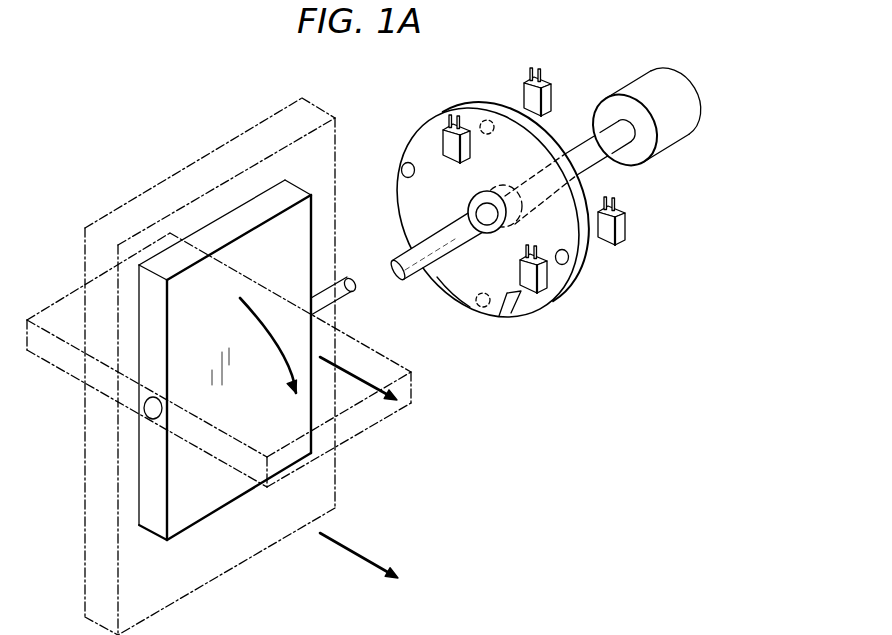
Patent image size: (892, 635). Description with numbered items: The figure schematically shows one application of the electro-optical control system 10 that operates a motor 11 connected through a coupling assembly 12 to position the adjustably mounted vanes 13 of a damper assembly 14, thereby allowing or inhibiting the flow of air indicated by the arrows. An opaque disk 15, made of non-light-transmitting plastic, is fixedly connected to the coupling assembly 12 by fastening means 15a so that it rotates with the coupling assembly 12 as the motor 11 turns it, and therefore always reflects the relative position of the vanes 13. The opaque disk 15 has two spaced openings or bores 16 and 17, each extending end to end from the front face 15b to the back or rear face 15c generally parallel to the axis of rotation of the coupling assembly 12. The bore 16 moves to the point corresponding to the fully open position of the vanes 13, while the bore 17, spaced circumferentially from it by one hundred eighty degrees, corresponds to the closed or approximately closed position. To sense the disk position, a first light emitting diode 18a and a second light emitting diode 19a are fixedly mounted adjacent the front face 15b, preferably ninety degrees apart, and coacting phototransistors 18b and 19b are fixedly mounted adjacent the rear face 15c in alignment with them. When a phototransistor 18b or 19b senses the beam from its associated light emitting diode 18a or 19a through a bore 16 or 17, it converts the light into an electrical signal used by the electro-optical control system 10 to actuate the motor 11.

The electro-optical control system 10 is at (612, 277).
The motor 11 is at (637, 80).
The coupling assembly 12 is at (352, 293).
The vanes 13 is at (404, 362).
The damper assembly 14 is at (262, 122).
The opaque disk 15 is at (390, 228).
The fastening means 15a is at (467, 194).
The front face 15b is at (470, 306).
The back or rear face 15c is at (516, 305).
The opening or bore 16 is at (405, 162).
The opening or bore 17 is at (476, 286).
The first light emitting diode 18a is at (443, 132).
The phototransistor 18b is at (523, 100).
The second light emitting diode 19a is at (548, 286).
The phototransistor 19b is at (627, 230).